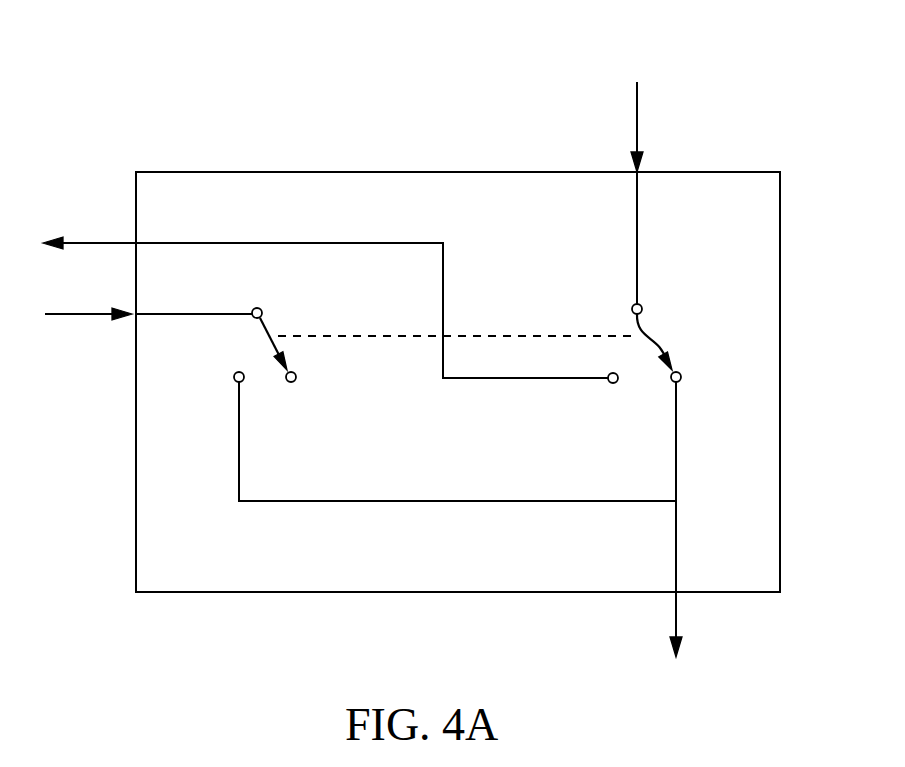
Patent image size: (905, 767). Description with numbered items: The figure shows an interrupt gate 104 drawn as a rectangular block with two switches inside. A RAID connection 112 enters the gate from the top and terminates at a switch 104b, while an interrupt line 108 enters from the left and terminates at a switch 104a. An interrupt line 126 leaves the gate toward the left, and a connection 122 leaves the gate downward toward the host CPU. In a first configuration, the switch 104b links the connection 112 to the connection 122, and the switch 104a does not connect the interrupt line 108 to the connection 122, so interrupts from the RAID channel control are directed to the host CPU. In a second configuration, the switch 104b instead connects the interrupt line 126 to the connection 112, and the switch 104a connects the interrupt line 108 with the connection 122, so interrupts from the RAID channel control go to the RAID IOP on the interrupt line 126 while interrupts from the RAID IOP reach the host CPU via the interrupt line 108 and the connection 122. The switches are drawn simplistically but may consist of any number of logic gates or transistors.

The interrupt gate 104 is at (416, 50).
The switch 104a is at (208, 355).
The switch 104b is at (672, 312).
The interrupt line 108 is at (78, 318).
The RAID connection 112 is at (637, 107).
The connection 122 is at (676, 622).
The interrupt line 126 is at (101, 243).